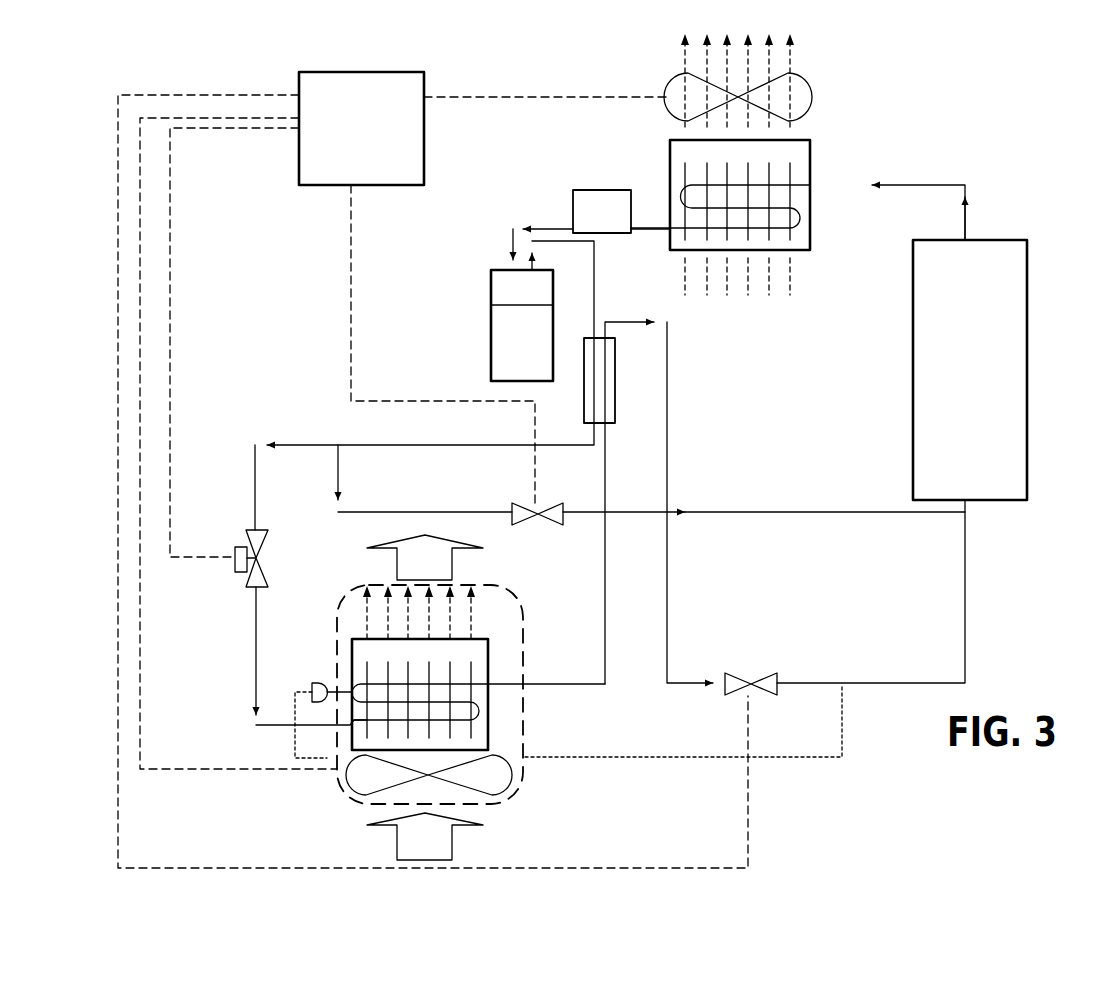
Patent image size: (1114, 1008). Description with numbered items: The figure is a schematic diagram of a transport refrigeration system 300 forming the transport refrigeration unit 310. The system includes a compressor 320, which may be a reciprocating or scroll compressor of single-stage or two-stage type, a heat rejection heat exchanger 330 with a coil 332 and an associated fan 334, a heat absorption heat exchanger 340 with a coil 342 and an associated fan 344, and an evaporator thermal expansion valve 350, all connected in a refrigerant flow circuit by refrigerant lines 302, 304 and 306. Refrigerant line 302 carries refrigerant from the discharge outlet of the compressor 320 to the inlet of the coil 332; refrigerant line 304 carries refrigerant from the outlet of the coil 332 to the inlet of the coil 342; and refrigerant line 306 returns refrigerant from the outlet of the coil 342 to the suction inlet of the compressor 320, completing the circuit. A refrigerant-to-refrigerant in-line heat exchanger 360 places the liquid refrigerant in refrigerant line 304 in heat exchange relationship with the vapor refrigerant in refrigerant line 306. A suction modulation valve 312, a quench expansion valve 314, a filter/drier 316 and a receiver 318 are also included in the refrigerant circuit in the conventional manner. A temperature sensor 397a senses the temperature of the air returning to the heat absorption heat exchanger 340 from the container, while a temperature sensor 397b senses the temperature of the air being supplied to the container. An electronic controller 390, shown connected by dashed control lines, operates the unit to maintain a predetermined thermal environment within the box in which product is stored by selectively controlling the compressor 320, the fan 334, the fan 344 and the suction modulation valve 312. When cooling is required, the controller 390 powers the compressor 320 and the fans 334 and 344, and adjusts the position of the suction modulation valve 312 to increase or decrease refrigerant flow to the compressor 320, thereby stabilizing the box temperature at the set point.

The transport refrigeration system 300 is at (263, 90).
The transport refrigeration unit 310 is at (964, 84).
The electronic controller 390 is at (361, 128).
The fan 334 is at (812, 100).
The heat rejection heat exchanger 330 is at (812, 162).
The heat rejection heat exchanger coil 332 is at (800, 222).
The compressor 320 is at (1027, 264).
The refrigerant line 302 is at (914, 185).
The filter/drier 316 is at (621, 211).
The receiver 318 is at (491, 318).
The refrigerant line 304 is at (532, 227).
The refrigerant-to-refrigerant in-line heat exchanger 360 is at (615, 405).
The quench expansion valve 314 is at (563, 511).
The evaporator thermal expansion valve 350 is at (247, 578).
The refrigerant line 306 is at (674, 717).
The suction modulation valve 312 is at (779, 678).
The heat absorption heat exchanger 340 is at (490, 665).
The heat absorption heat exchanger coil 342 is at (488, 720).
The fan 344 is at (510, 795).
The temperature sensor 397b is at (425, 557).
The temperature sensor 397a is at (425, 836).